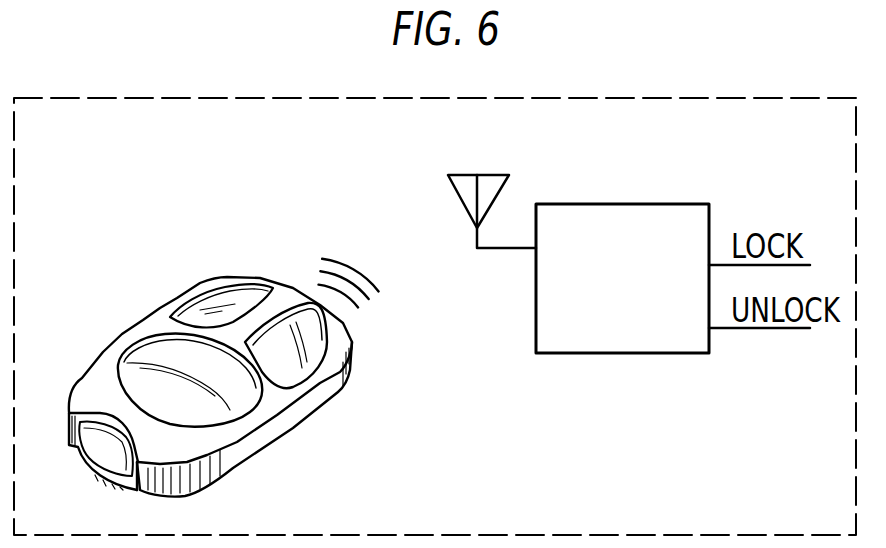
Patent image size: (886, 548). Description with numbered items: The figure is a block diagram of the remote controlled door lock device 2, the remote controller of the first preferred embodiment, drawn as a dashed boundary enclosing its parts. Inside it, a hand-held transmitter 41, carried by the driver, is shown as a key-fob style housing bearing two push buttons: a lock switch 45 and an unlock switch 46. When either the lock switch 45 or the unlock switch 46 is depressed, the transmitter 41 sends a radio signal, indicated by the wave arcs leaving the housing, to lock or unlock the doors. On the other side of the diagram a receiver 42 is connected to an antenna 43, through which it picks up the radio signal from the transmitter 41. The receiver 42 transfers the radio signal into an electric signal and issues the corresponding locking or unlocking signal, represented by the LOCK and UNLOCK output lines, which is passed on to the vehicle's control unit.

The remote controlled door lock device 2 is at (541, 98).
The transmitter 41 is at (260, 447).
The receiver 42 is at (627, 204).
The antenna 43 is at (488, 175).
The lock switch 45 is at (162, 352).
The unlock switch 46 is at (330, 325).